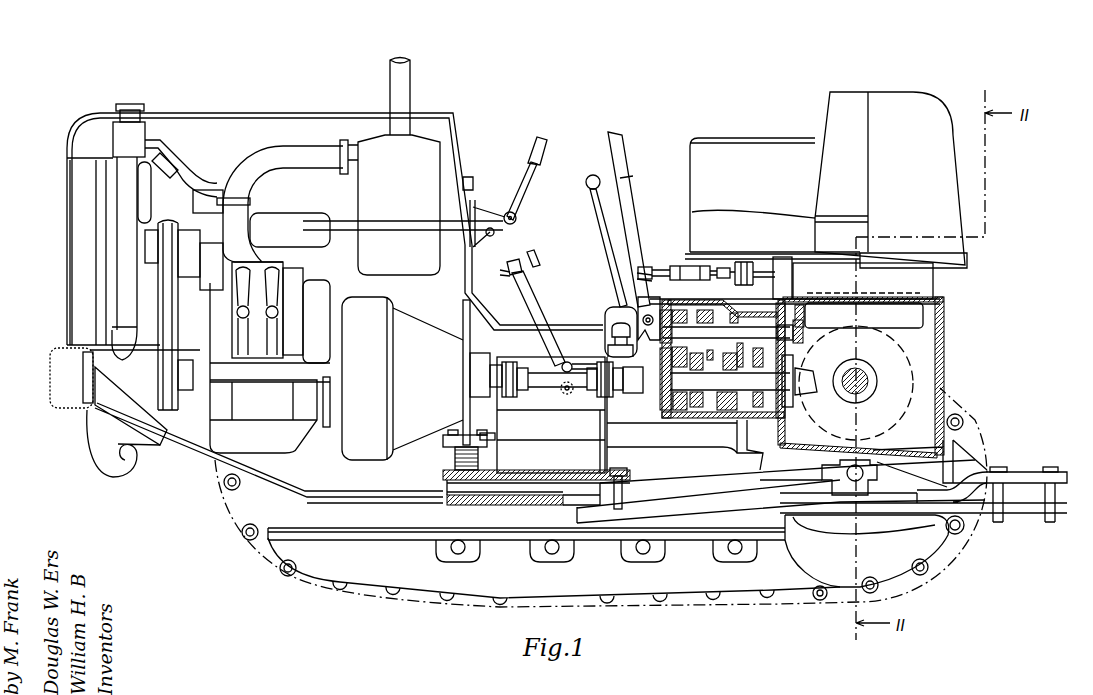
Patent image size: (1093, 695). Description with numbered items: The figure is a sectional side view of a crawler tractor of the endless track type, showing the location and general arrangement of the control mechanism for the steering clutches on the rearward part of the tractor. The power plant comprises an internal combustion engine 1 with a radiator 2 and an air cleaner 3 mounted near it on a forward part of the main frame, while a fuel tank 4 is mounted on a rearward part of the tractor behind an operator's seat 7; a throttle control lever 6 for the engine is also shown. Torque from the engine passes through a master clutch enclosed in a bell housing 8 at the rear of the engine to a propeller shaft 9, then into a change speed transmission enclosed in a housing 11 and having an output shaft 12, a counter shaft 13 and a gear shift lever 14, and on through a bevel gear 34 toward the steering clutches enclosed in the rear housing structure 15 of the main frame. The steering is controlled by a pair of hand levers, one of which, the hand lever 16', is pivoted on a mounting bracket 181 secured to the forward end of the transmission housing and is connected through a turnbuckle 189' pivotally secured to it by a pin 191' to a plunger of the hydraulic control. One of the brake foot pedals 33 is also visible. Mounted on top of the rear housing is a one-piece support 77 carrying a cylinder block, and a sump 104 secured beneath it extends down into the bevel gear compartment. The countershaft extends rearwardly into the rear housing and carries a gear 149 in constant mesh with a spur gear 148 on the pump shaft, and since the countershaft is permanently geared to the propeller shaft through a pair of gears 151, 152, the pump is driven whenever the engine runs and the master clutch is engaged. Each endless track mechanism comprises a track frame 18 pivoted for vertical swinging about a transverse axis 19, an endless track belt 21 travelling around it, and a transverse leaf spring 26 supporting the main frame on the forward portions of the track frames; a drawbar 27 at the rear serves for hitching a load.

The internal combustion engine 1 is at (315, 271).
The radiator 2 is at (128, 277).
The air cleaner 3 is at (404, 199).
The fuel tank 4 is at (914, 181).
The throttle control lever 6 is at (532, 148).
The operator's seat 7 is at (750, 215).
The bell housing 8 is at (369, 383).
The propeller shaft 9 is at (540, 381).
The transmission housing 11 is at (764, 416).
The output shaft 12 is at (796, 410).
The counter shaft 13 is at (750, 328).
The gear shift lever 14 is at (600, 232).
The rear housing structure 15 is at (941, 369).
The hand lever 16' is at (632, 219).
The track frame 18 is at (398, 526).
The transverse pivot axis 19 is at (863, 468).
The endless track belt 21 is at (273, 561).
The transverse leaf spring 26 is at (460, 456).
The drawbar 27 is at (1023, 510).
The foot pedal 33 is at (530, 296).
The bevel gear 34 is at (800, 393).
The support 77 is at (910, 283).
The sump 104 is at (898, 327).
The spur gear 148 is at (798, 304).
The gear 149 is at (807, 345).
The gear 151 is at (672, 408).
The gear 152 is at (690, 316).
The mounting bracket 181 is at (656, 332).
The turnbuckle 189' is at (722, 259).
The pin 191' is at (658, 261).